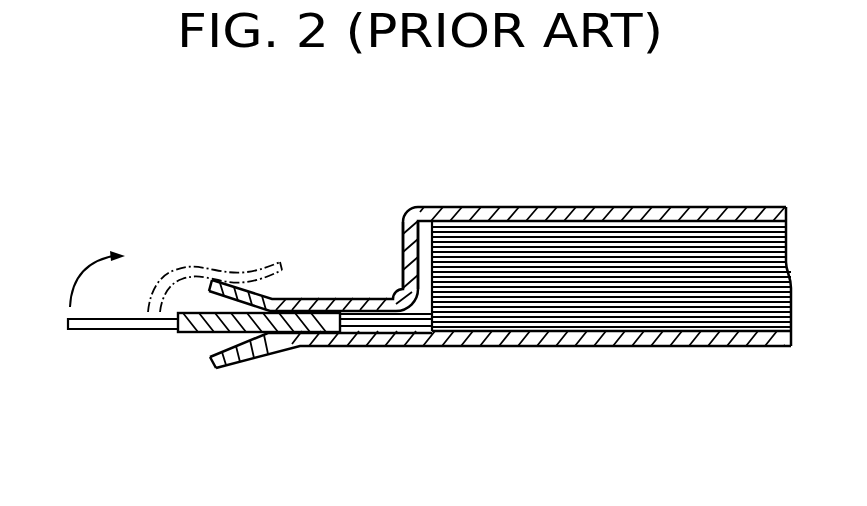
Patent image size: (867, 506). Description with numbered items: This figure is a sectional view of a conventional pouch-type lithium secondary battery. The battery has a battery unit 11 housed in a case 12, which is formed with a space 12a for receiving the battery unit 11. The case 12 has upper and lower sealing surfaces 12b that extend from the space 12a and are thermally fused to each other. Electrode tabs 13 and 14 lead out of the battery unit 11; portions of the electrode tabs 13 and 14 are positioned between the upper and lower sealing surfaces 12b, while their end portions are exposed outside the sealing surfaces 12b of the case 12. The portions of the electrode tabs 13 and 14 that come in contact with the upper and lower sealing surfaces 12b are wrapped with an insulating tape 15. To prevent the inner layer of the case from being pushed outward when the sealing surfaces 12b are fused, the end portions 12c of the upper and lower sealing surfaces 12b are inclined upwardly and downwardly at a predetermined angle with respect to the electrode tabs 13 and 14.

The battery unit 11 is at (650, 305).
The case 12 is at (500, 295).
The space 12a is at (425, 243).
The upper and lower sealing surfaces 12b is at (333, 298).
The end portions of the upper and lower sealing surfaces 12c is at (230, 360).
The electrode tab 13 is at (122, 323).
The electrode tab 14 is at (123, 367).
The insulating tape 15 is at (307, 320).